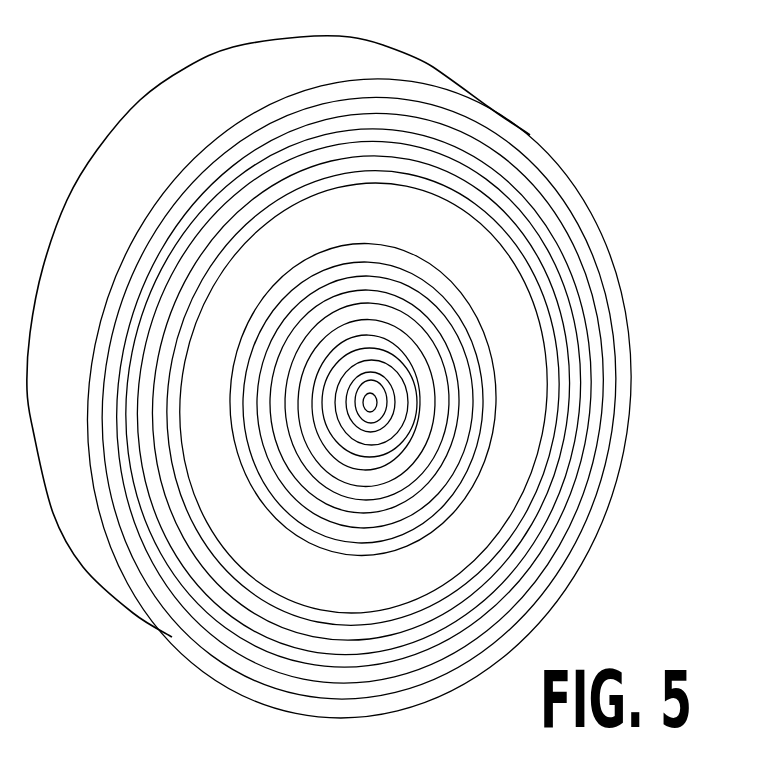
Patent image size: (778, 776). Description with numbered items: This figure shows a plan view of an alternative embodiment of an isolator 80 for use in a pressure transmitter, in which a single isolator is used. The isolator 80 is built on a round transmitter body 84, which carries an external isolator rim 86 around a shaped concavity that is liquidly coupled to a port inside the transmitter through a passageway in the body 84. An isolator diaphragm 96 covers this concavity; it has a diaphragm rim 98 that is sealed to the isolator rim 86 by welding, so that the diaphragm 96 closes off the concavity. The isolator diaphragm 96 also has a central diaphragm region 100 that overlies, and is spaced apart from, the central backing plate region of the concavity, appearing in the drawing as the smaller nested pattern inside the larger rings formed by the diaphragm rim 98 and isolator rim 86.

The isolator 80 is at (601, 165).
The transmitter body 84 is at (124, 162).
The isolator rim 86 is at (221, 143).
The isolator diaphragm 96 is at (620, 463).
The diaphragm rim 98 is at (590, 528).
The central diaphragm region 100 is at (481, 397).